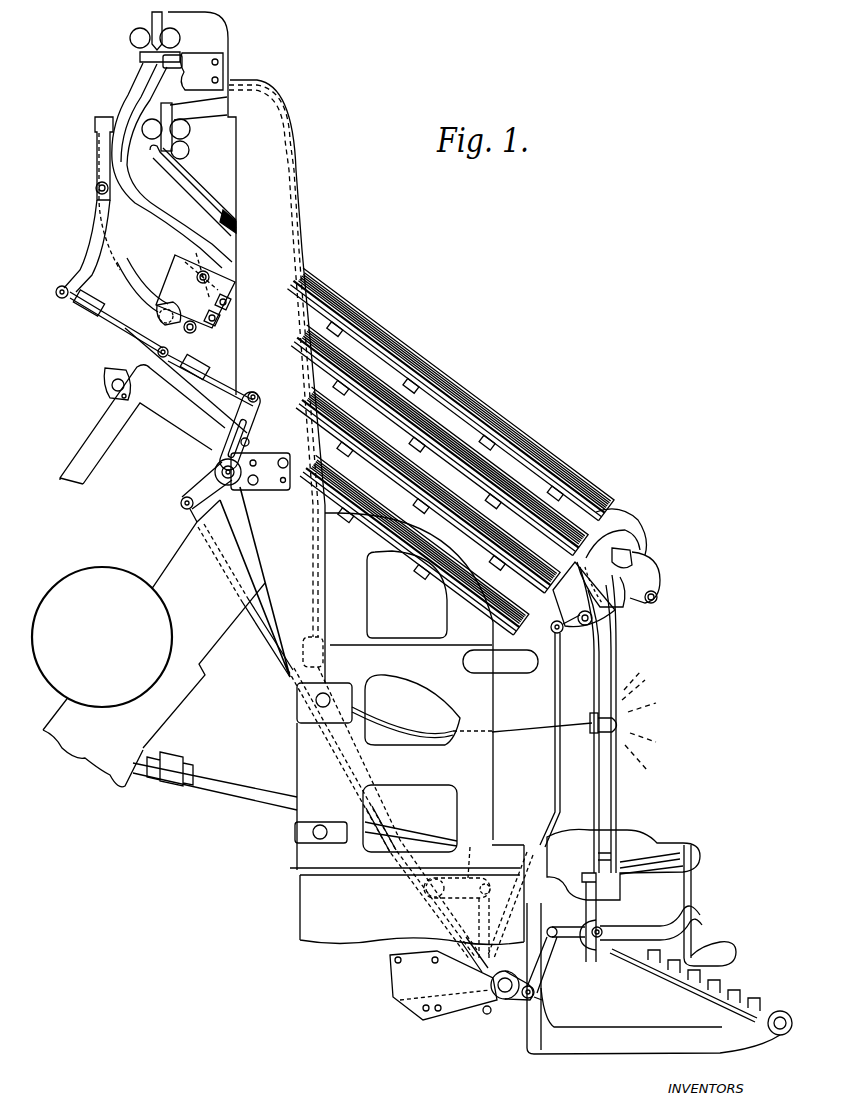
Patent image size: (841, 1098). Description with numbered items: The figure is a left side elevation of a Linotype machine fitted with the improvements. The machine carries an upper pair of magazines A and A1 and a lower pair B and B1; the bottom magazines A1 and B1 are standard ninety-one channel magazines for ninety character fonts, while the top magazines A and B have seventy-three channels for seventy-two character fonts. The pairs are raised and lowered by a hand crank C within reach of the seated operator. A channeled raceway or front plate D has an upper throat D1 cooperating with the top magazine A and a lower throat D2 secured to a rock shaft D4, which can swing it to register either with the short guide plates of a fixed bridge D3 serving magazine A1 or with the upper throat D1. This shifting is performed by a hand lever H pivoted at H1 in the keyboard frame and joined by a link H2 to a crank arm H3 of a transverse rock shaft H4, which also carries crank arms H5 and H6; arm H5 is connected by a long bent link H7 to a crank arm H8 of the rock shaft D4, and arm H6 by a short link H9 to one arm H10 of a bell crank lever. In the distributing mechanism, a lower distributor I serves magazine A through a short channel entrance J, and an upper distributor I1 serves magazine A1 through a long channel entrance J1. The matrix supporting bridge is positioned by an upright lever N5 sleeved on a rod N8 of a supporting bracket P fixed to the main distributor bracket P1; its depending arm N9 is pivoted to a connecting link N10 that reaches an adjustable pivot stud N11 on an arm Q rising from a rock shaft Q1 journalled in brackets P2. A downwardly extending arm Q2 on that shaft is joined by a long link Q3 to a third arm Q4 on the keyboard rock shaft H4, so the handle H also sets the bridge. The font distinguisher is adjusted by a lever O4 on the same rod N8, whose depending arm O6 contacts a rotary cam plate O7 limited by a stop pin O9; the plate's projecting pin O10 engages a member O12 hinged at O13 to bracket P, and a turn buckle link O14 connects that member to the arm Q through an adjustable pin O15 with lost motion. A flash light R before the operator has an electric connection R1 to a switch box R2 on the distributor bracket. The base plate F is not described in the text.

The upper distributor I1 is at (130, 29).
The switch box R2 is at (190, 62).
The electric connection R1 is at (245, 82).
The main distributor bracket P1 is at (282, 253).
The lower distributor I is at (192, 137).
The channel entrance J is at (185, 182).
The channel entrance J1 is at (155, 218).
The upright lever N5 is at (95, 126).
The lever O4 is at (97, 161).
The rod N8 is at (96, 189).
The supporting bracket P is at (135, 241).
The depending arm N9 is at (85, 263).
The depending arm O6 is at (137, 282).
The rotary cam plate O7 is at (163, 297).
The hinge O13 is at (212, 278).
The swinging member O12 is at (170, 339).
The connecting link N10 is at (112, 327).
The stop pin O9 is at (117, 377).
The turn buckle link O14 is at (222, 388).
The laterally projecting pin O10 is at (108, 399).
The arm Q is at (262, 433).
The adjustable pin O15 is at (268, 396).
The adjustable pivot stud N11 is at (251, 443).
The transverse rock shaft Q1 is at (215, 472).
The downwardly extending arm Q2 is at (200, 487).
The supporting brackets P2 is at (268, 490).
The long link Q3 is at (282, 667).
The top magazine A is at (505, 437).
The bottom magazine A1 is at (508, 488).
The top magazine B is at (470, 520).
The bottom magazine B1 is at (350, 498).
The channeled raceway D is at (618, 790).
The upper throat D1 is at (640, 528).
The fixed bridge D3 is at (602, 560).
The lower throat D2 is at (655, 612).
The crank arm H8 is at (577, 612).
The rock shaft D4 is at (585, 630).
The long bent link H7 is at (555, 716).
The flash light R is at (621, 706).
The hand lever H is at (695, 924).
The hand crank C is at (722, 950).
The pivot H1 is at (603, 929).
The link H2 is at (541, 968).
The crank arm H3 is at (530, 1000).
The base plate F is at (659, 978).
The transverse rock shaft H4 is at (508, 1000).
The third arm Q4 is at (487, 1015).
The crank arm H5 is at (470, 989).
The crank arm H6 is at (400, 1000).
The short link H9 is at (485, 920).
The bell crank lever arm H10 is at (474, 850).